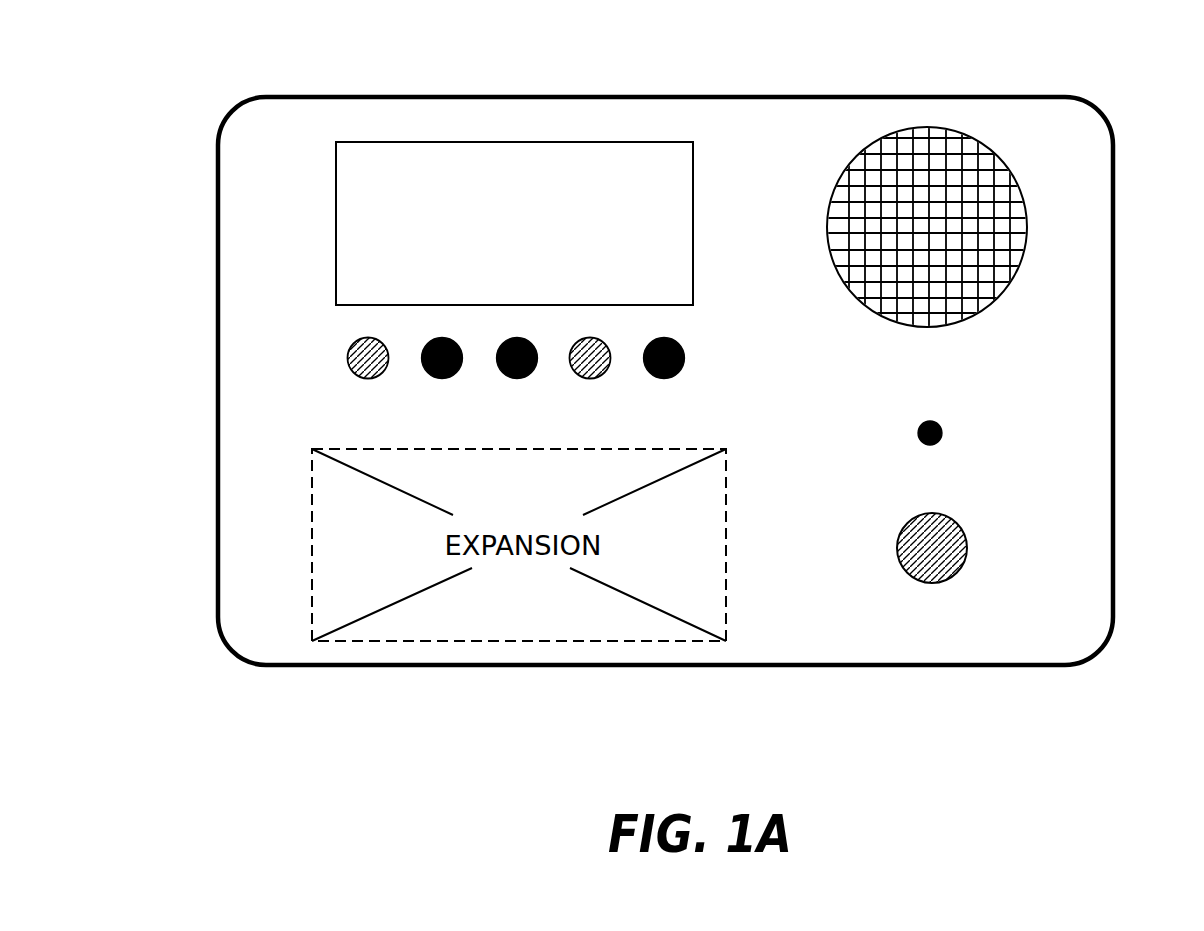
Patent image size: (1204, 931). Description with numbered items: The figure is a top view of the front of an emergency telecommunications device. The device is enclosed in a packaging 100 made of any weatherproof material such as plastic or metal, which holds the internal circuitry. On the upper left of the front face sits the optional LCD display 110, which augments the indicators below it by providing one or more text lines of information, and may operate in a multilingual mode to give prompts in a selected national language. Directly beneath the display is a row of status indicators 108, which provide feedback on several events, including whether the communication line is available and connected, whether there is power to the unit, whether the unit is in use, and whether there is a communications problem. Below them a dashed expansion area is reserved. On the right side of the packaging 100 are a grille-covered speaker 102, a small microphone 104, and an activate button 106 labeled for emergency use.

The packaging 100 is at (908, 657).
The speaker 102 is at (1027, 243).
The microphone 104 is at (942, 432).
The activate button 106 is at (968, 551).
The status indicators 108 is at (348, 359).
The LCD display 110 is at (336, 258).